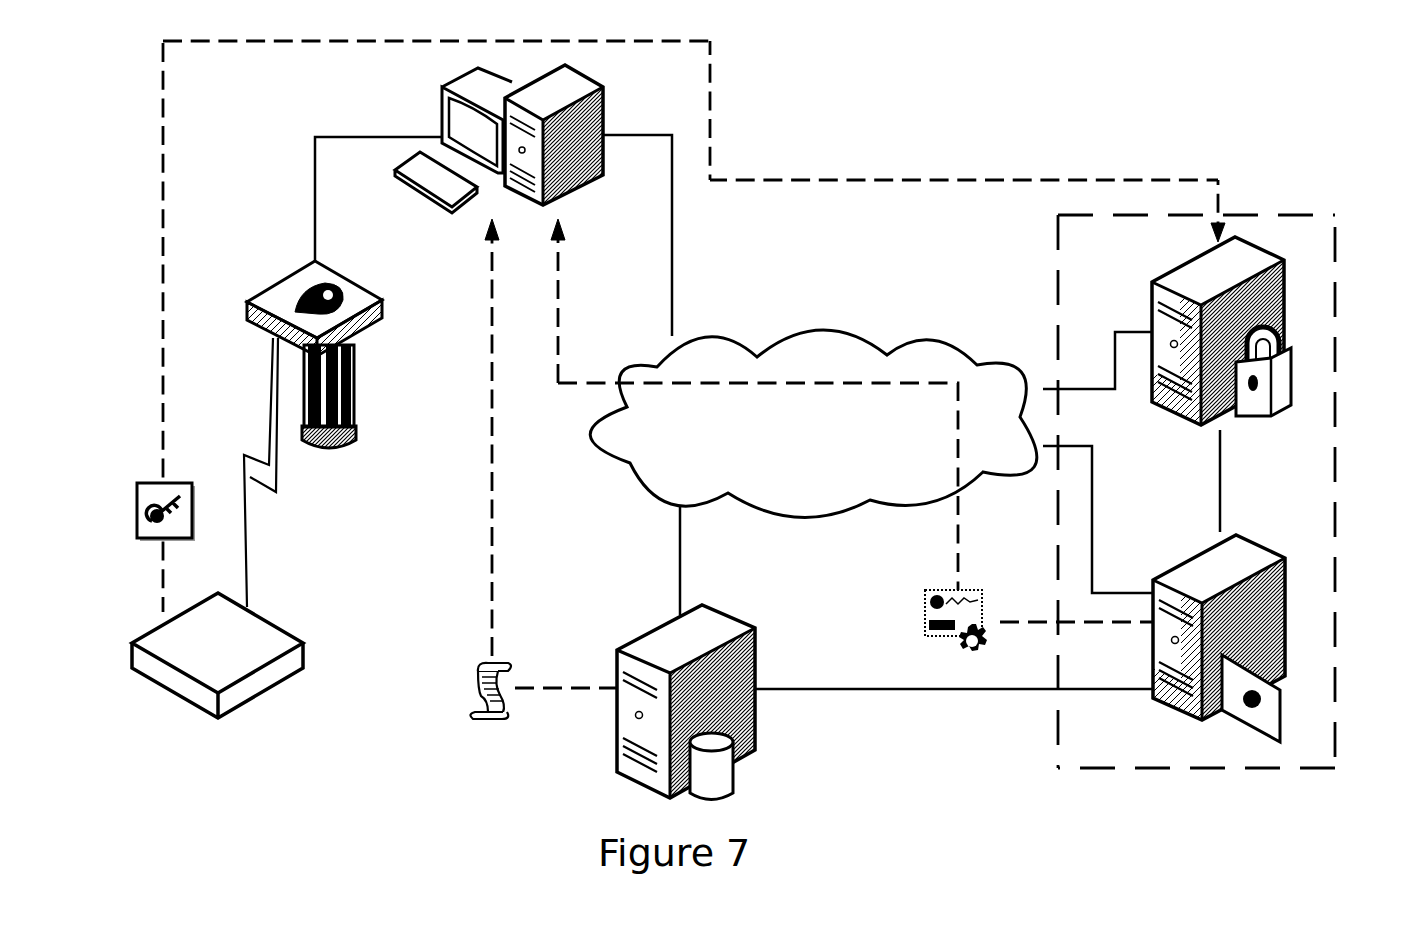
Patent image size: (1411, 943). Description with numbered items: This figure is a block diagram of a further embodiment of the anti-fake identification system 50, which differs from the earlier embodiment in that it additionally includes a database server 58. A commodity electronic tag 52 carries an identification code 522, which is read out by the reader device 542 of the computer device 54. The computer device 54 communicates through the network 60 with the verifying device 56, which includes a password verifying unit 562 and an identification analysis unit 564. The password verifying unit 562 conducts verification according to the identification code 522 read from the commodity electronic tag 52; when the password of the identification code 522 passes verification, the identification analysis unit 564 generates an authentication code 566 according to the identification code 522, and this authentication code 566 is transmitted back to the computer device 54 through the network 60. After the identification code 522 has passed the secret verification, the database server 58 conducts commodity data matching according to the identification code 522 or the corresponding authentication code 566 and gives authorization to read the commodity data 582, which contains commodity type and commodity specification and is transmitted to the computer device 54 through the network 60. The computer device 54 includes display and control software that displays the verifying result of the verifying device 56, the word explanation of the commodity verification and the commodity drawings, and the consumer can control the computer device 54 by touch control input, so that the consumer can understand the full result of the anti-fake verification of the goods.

The anti-fake identification system 50 is at (1278, 31).
The commodity electronic tag 52 is at (155, 637).
The identification code 522 is at (137, 512).
The computer device 54 is at (603, 120).
The reader device 542 is at (382, 317).
The verifying device 56 is at (1058, 288).
The password verifying unit 562 is at (1284, 303).
The identification analysis unit 564 is at (1285, 606).
The authentication code 566 is at (925, 617).
The database server 58 is at (645, 635).
The commodity data 582 is at (472, 676).
The network 60 is at (760, 355).